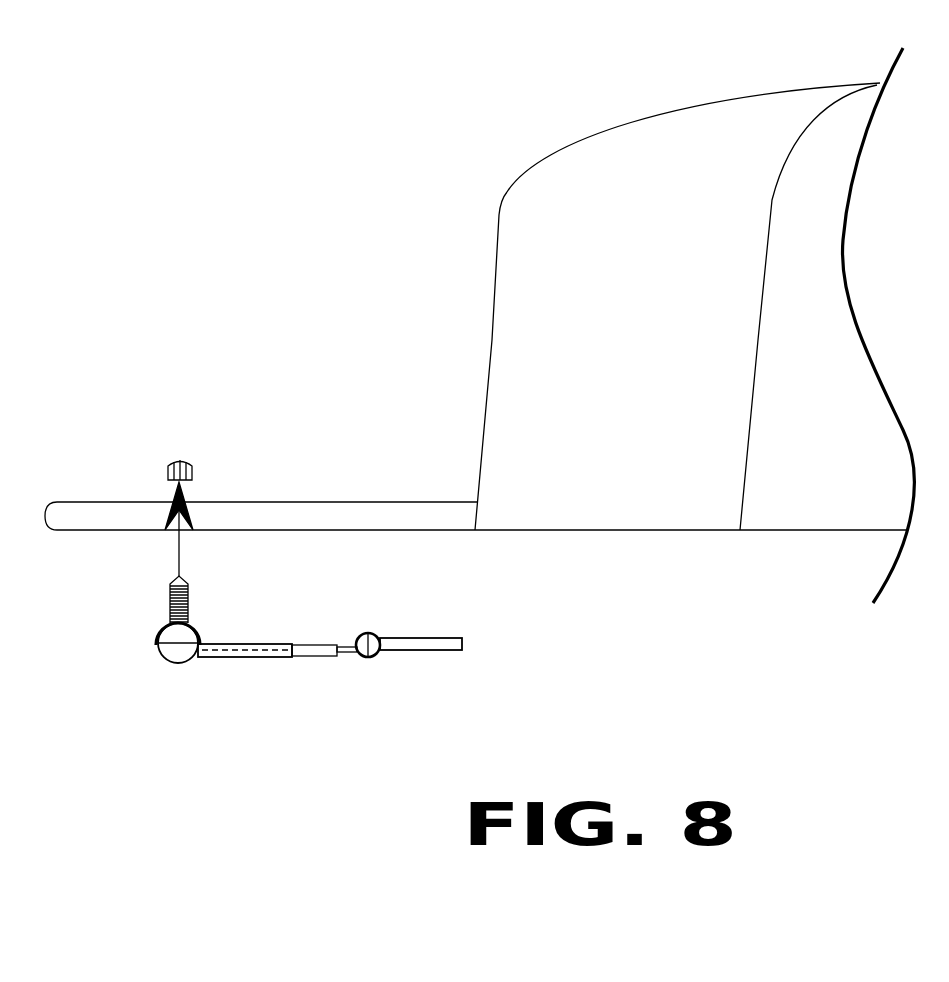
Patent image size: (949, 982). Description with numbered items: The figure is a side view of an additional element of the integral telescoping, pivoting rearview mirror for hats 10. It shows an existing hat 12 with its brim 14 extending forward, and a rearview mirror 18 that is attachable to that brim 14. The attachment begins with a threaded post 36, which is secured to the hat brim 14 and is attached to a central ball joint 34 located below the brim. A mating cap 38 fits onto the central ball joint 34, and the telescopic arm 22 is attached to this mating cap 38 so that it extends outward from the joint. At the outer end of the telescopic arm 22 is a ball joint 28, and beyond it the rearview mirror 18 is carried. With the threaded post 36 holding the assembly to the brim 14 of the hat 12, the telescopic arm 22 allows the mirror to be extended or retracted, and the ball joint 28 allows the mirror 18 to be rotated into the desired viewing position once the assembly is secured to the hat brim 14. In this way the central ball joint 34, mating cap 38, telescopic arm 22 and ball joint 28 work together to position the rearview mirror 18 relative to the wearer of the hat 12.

The integral telescoping, pivoting rearview mirror for hats 10 is at (157, 222).
The hat 12 is at (508, 190).
The brim 14 is at (277, 503).
The rearview mirror 18 is at (425, 647).
The telescopic arm 22 is at (267, 658).
The ball joint 28 is at (370, 633).
The central ball joint 34 is at (173, 648).
The threaded post 36 is at (165, 475).
The mating cap 38 is at (170, 593).